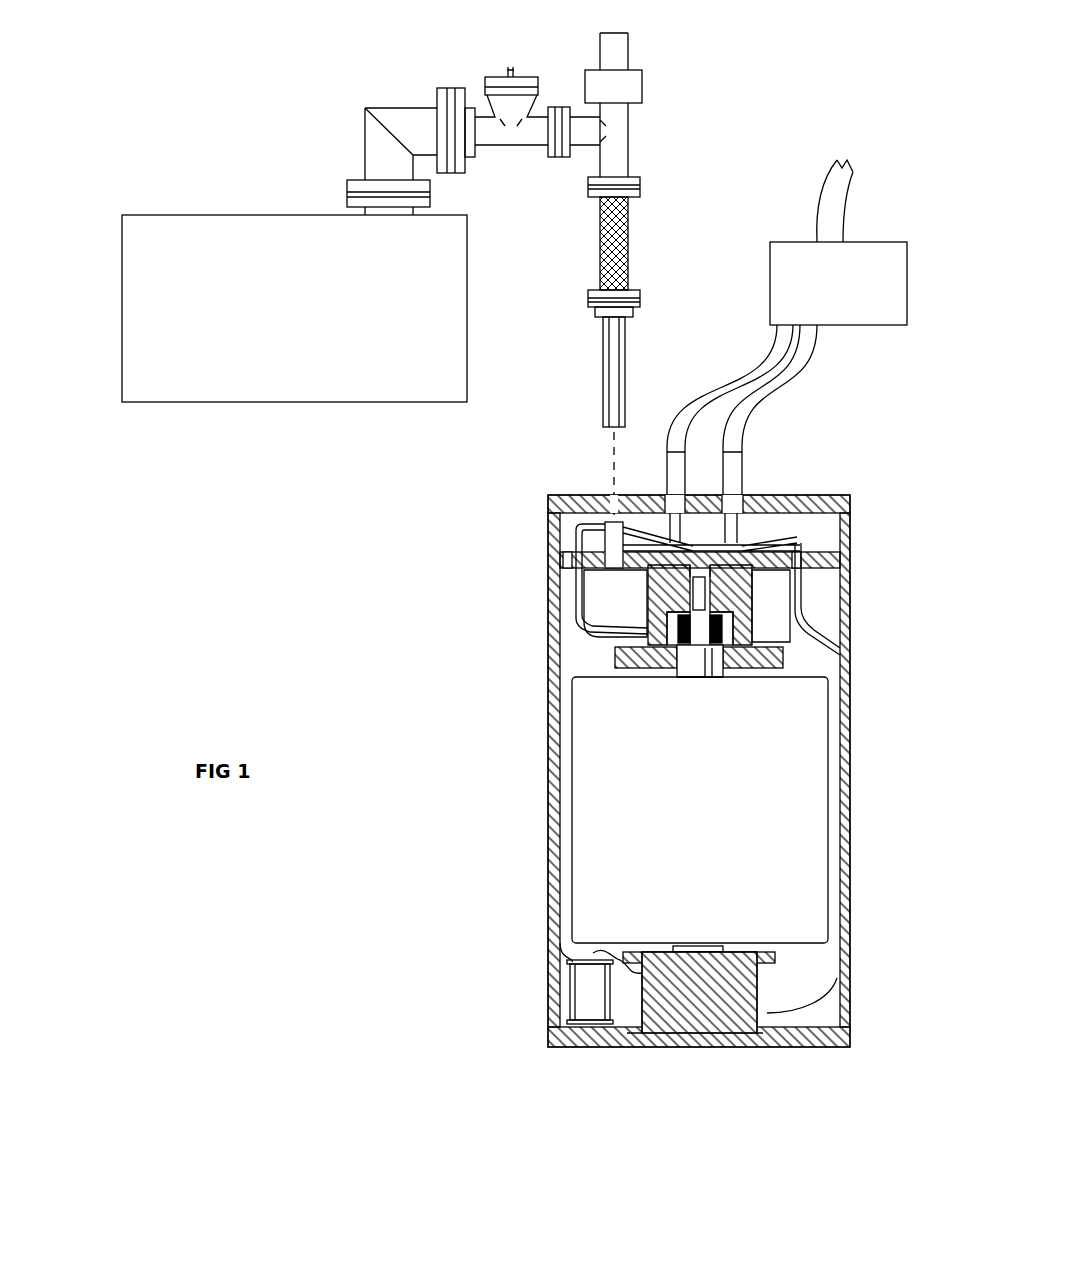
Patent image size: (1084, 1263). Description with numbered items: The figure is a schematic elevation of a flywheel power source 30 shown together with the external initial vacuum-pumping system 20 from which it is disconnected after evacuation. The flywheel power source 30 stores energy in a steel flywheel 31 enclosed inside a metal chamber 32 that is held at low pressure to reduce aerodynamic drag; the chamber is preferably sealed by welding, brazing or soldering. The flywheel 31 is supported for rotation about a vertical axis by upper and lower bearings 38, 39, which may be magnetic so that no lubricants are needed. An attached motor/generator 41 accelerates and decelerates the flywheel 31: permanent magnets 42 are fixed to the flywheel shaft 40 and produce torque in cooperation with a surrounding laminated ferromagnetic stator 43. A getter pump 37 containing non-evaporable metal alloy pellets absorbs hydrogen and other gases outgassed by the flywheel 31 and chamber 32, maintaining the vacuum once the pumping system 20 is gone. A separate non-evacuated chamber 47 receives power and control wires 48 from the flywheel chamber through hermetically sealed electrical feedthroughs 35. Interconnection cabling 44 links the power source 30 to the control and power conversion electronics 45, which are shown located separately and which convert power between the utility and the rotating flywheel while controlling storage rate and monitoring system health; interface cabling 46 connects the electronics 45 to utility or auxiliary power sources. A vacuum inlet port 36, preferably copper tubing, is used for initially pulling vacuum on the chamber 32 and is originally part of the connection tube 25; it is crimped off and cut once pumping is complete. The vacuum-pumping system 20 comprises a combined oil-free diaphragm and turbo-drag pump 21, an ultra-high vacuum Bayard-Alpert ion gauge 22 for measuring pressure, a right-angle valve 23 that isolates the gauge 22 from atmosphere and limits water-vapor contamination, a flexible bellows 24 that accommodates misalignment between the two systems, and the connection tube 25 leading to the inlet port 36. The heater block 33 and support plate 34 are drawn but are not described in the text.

The external initial vacuum-pumping system 20 is at (137, 150).
The combined diaphragm and turbo-drag pump 21 is at (122, 317).
The ultra-high vacuum Bayard-Alpert ion gauge 22 is at (495, 75).
The right-angle valve 23 is at (628, 142).
The bellows 24 is at (628, 242).
The connection tube 25 is at (625, 373).
The flywheel power source 30 is at (383, 578).
The steel flywheel 31 is at (572, 793).
The metal chamber 32 is at (548, 823).
The heater block 33 is at (642, 987).
The support plate 34 is at (612, 653).
The electrical feedthroughs 35 is at (563, 543).
The vacuum inlet port 36 is at (600, 520).
The getter pump 37 is at (570, 970).
The upper bearing 38 is at (745, 674).
The lower bearing 39 is at (657, 943).
The flywheel shaft 40 is at (680, 673).
The motor/generator 41 is at (678, 600).
The permanent magnets 42 is at (713, 647).
The laminated ferromagnetic stator 43 is at (735, 625).
The interconnection cabling 44 is at (780, 402).
The control and power conversion electronics 45 is at (907, 283).
The interface cabling 46 is at (848, 193).
The non-evacuated chamber 47 is at (823, 530).
The power and control wires 48 is at (570, 593).